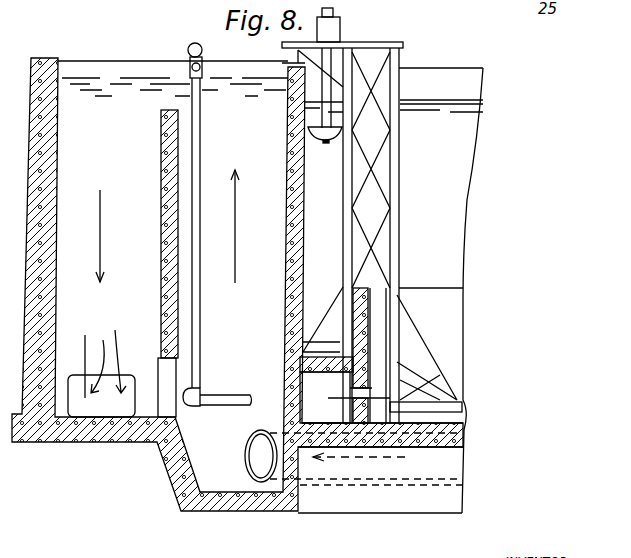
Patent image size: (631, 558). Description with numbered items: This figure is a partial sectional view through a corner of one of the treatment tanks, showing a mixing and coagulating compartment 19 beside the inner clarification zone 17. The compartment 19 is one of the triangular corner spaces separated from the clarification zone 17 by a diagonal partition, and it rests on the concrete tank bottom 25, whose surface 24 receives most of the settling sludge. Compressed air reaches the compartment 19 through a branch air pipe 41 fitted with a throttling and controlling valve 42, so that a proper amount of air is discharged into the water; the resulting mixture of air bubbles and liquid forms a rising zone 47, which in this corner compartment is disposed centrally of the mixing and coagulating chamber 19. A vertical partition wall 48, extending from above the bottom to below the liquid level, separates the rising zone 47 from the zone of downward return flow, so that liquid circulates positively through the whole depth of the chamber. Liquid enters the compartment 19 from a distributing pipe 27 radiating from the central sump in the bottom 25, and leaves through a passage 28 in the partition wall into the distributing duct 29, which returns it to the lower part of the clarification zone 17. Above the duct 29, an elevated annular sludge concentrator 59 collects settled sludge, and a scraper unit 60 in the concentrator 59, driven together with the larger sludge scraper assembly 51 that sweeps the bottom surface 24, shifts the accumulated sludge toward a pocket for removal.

The clarification zone 17 is at (442, 173).
The mixing and coagulating compartment 19 is at (143, 111).
The surface of tank bottom 24 is at (463, 427).
The tank bottom 25 is at (458, 437).
The distributing pipe 27 is at (368, 487).
The passage 28 is at (101, 367).
The distributing duct 29 is at (310, 387).
The branch air pipe 41 is at (201, 128).
The throttling and controlling valve 42 is at (190, 60).
The rising zone 47 is at (258, 291).
The partition wall 48 is at (161, 218).
The sludge scraper assembly 51 is at (463, 400).
The sludge concentrator 59 is at (315, 303).
The scraper unit 60 is at (302, 355).